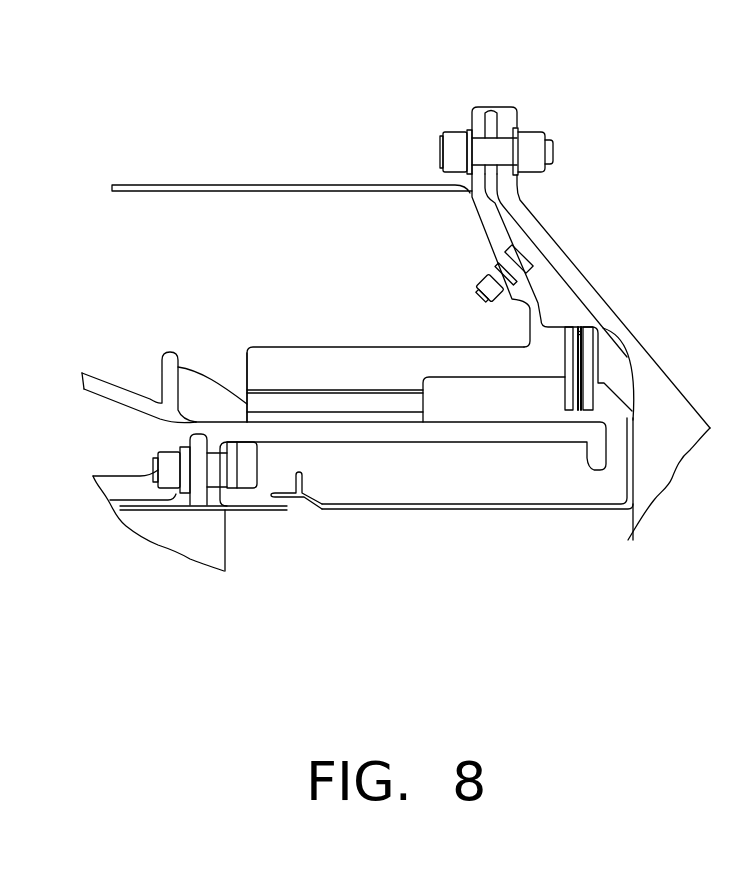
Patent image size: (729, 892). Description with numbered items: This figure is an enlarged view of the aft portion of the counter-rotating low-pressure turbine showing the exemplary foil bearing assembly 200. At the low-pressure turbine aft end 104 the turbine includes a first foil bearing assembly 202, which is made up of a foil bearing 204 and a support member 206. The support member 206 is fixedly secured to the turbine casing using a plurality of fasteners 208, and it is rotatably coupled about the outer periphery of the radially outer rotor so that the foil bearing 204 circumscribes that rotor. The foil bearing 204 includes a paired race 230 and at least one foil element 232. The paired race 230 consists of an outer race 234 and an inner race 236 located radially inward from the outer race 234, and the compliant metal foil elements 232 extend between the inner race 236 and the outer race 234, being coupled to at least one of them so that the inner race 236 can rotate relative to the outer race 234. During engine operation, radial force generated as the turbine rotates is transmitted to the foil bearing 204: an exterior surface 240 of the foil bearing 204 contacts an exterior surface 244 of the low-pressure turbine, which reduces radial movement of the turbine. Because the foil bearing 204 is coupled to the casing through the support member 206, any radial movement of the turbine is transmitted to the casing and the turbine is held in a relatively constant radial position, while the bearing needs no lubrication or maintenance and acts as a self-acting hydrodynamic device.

The low-pressure turbine aft end 104 is at (566, 215).
The foil bearing assembly 200 is at (212, 156).
The first foil bearing assembly 202 is at (406, 329).
The foil bearing 204 is at (318, 347).
The support member 206 is at (530, 305).
The fasteners 208 is at (490, 273).
The paired race 230 is at (428, 413).
The foil element 232 is at (162, 367).
The outer race 234 is at (246, 371).
The inner race 236 is at (317, 420).
The exterior surface 240 is at (413, 425).
The exterior surface 244 is at (598, 423).